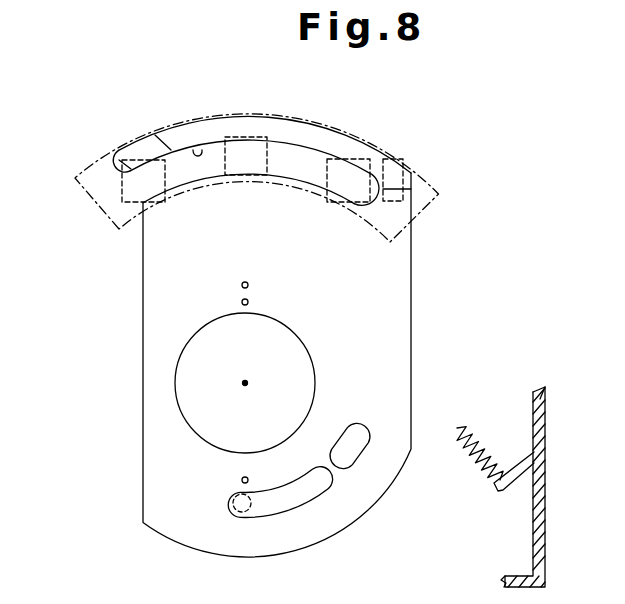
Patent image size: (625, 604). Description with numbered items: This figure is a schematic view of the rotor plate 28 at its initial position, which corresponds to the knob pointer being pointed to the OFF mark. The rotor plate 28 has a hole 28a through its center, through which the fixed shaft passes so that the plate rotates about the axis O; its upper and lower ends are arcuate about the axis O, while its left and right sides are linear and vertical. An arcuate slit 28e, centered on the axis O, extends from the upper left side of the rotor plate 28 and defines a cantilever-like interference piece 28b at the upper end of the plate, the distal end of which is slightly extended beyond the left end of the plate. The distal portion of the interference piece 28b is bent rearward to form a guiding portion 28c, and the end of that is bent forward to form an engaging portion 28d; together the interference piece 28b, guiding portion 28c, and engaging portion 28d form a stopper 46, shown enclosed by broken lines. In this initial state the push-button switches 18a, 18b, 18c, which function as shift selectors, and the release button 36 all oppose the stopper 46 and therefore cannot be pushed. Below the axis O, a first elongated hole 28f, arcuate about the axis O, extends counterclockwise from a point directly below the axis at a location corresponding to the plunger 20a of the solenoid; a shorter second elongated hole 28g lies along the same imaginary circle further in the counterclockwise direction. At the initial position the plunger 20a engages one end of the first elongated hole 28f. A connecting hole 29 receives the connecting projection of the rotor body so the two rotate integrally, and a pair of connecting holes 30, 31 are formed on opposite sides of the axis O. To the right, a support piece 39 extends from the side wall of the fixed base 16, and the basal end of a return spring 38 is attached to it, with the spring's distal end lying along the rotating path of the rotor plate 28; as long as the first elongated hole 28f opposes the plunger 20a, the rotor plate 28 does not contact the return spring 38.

The rotor plate 28 is at (412, 316).
The hole 28a is at (288, 334).
The interference piece 28b is at (318, 138).
The guiding portion 28c is at (138, 150).
The engaging portion 28d is at (118, 161).
The arcuate slit 28e is at (198, 150).
The first elongated hole 28f is at (295, 500).
The second elongated hole 28g is at (352, 452).
The push-button switch 18a is at (238, 177).
The push-button switch 18b is at (157, 203).
The push-button switch 18c is at (343, 203).
The release button 36 is at (428, 176).
The stopper 46 is at (420, 212).
The connecting hole 29 is at (249, 301).
The connecting hole 30 is at (248, 283).
The connecting hole 31 is at (241, 480).
The plunger 20a is at (237, 518).
The axis O is at (263, 385).
The return spring 38 is at (485, 443).
The support piece 39 is at (509, 490).
The fixed base 16 is at (545, 502).